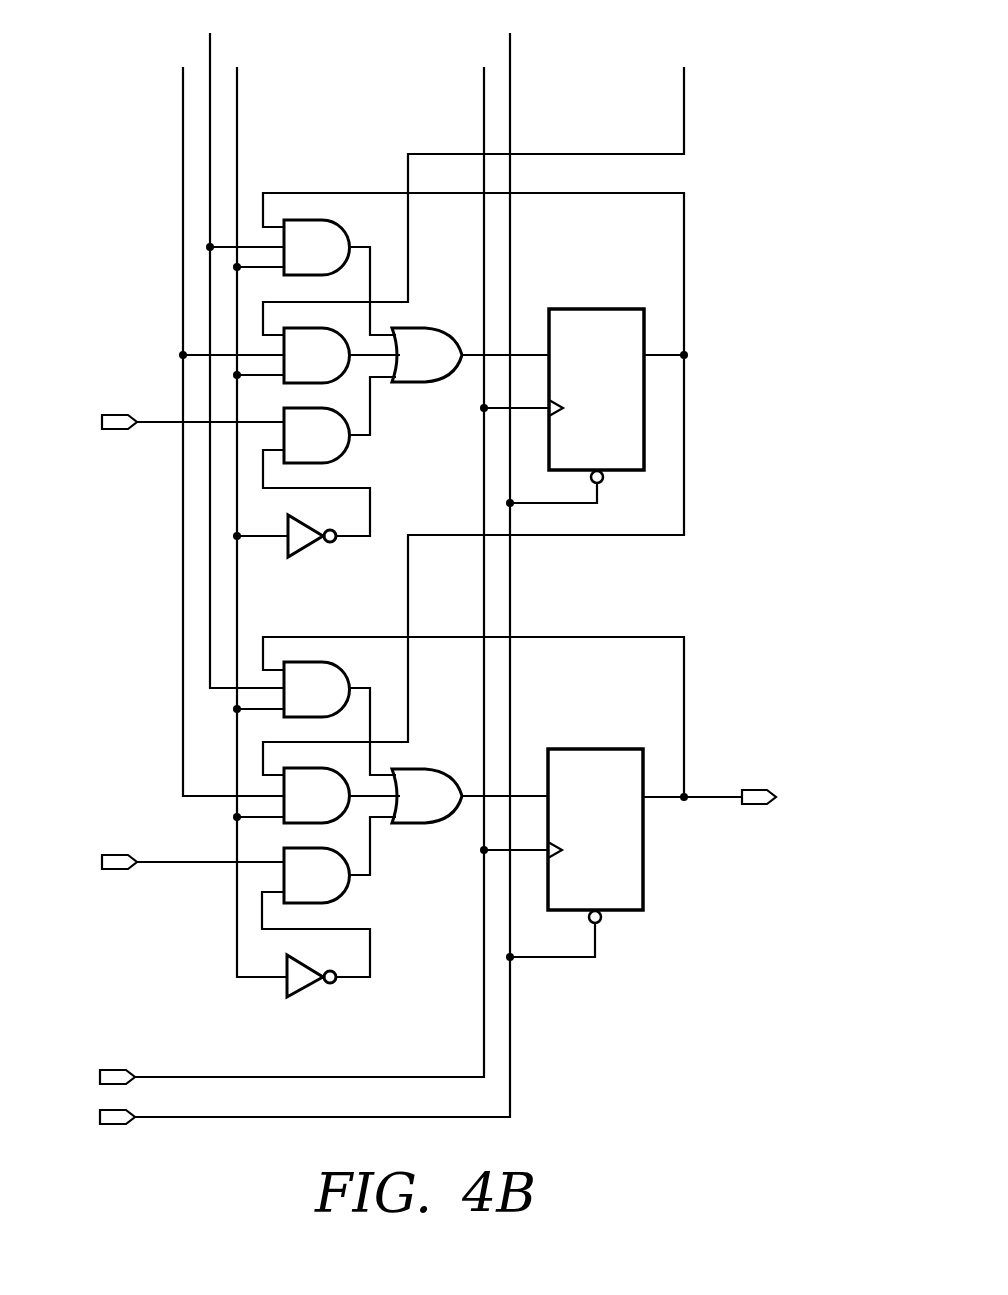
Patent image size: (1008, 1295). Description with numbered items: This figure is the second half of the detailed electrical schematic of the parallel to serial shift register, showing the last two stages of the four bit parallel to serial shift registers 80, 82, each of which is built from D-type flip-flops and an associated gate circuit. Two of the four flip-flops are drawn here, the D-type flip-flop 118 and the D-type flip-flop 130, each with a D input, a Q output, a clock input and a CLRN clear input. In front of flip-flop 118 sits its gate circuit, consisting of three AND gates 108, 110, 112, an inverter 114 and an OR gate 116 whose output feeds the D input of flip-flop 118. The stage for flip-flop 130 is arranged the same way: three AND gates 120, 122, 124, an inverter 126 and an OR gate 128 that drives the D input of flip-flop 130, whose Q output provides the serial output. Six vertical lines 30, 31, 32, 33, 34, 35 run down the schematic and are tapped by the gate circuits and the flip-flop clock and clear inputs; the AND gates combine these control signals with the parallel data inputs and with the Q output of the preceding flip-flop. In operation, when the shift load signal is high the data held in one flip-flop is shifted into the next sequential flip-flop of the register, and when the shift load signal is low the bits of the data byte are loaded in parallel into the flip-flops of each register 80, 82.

The control signal line 30 is at (228, 420).
The control signal line 31 is at (241, 349).
The control signal line 32 is at (257, 510).
The clock signal line 33 is at (342, 560).
The clear signal line 34 is at (366, 564).
The signal line 35 is at (480, 189).
The four bit parallel to serial shift register 80 is at (434, 569).
The four bit parallel to serial shift register 82 is at (760, 168).
The AND gate 108 is at (337, 261).
The AND gate 110 is at (337, 369).
The AND gate 112 is at (337, 449).
The inverter 114 is at (303, 540).
The OR gate 116 is at (430, 357).
The D-type Flip-Flop 118 is at (597, 322).
The AND gate 120 is at (337, 703).
The AND gate 122 is at (337, 809).
The AND gate 124 is at (337, 889).
The inverter 126 is at (300, 981).
The OR gate 128 is at (428, 796).
The D-type Flip-Flop 130 is at (593, 763).